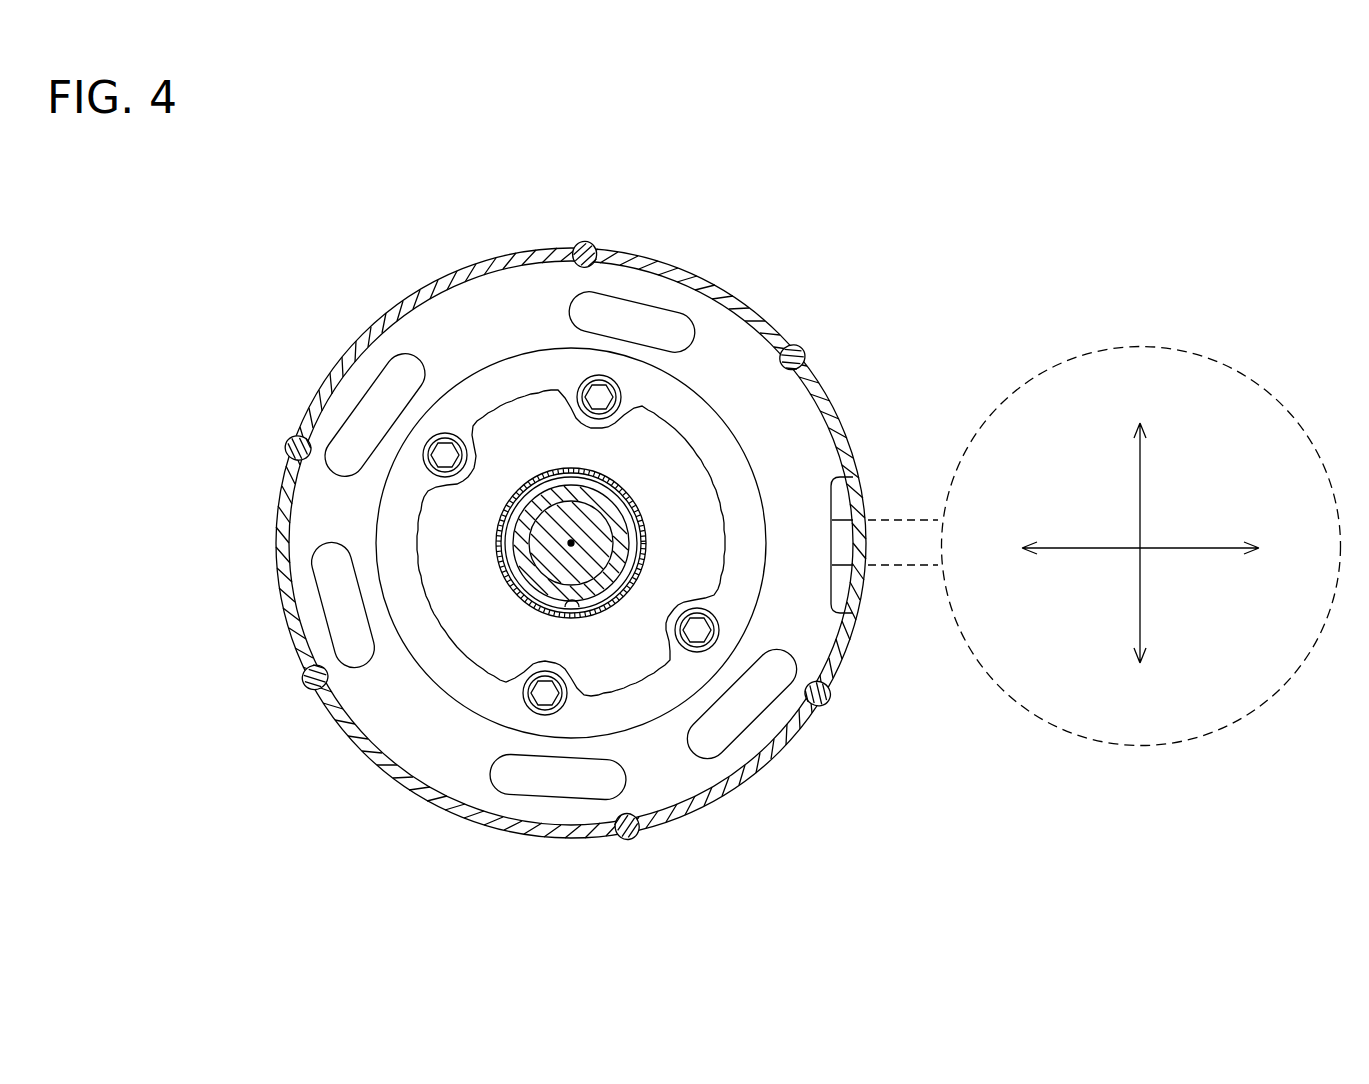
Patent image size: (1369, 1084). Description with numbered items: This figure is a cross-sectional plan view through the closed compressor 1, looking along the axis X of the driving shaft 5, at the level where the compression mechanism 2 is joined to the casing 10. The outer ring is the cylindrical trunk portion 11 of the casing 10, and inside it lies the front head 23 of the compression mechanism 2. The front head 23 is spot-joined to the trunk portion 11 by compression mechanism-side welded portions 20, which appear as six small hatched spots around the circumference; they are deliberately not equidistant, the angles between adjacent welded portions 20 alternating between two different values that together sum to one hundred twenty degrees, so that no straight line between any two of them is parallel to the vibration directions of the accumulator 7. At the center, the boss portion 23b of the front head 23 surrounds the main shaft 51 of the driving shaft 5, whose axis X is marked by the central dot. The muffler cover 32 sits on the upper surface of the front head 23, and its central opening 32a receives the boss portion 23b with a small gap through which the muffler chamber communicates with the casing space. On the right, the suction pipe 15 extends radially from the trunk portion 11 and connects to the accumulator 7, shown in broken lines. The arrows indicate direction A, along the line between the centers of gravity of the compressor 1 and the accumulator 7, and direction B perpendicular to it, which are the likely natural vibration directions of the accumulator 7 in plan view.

The closed compressor 1 is at (937, 206).
The compression mechanism 2 is at (412, 244).
The driving shaft 5 is at (433, 643).
The accumulator 7 is at (1244, 360).
The casing 10 is at (571, 500).
The trunk portion 11 is at (643, 258).
The suction pipe 15 is at (912, 567).
The compression mechanism-side welded portion 20 is at (584, 250).
The front head 23 is at (502, 302).
The boss portion 23b is at (543, 497).
The muffler cover 32 is at (683, 433).
The opening 32a is at (588, 612).
The main shaft 51 is at (545, 540).
The direction A is at (1088, 548).
The direction B is at (1143, 490).
The axis X is at (571, 543).